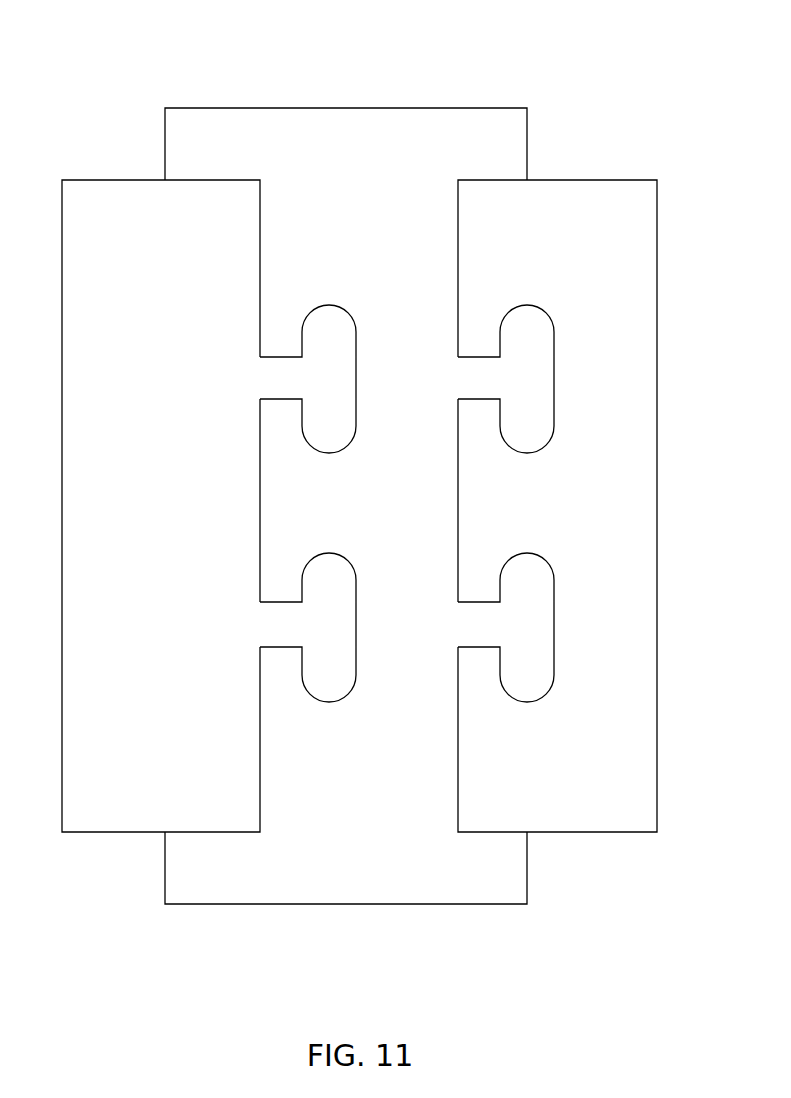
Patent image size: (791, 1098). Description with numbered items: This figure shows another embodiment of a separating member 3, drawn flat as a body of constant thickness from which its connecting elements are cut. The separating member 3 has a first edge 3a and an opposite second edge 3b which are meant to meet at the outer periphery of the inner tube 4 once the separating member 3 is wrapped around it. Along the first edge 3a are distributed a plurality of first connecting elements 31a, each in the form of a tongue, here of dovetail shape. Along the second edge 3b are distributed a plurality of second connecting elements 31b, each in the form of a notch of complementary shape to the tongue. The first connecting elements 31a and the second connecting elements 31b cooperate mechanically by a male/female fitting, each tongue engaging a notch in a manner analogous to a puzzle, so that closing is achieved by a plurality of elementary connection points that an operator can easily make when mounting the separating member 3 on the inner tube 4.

The separating member 3 is at (359, 457).
The first edge 3a is at (225, 506).
The second edge 3b is at (557, 506).
The first connecting element 31a is at (333, 296).
The second connecting element 31b is at (520, 296).
The inner tube 4 is at (243, 123).